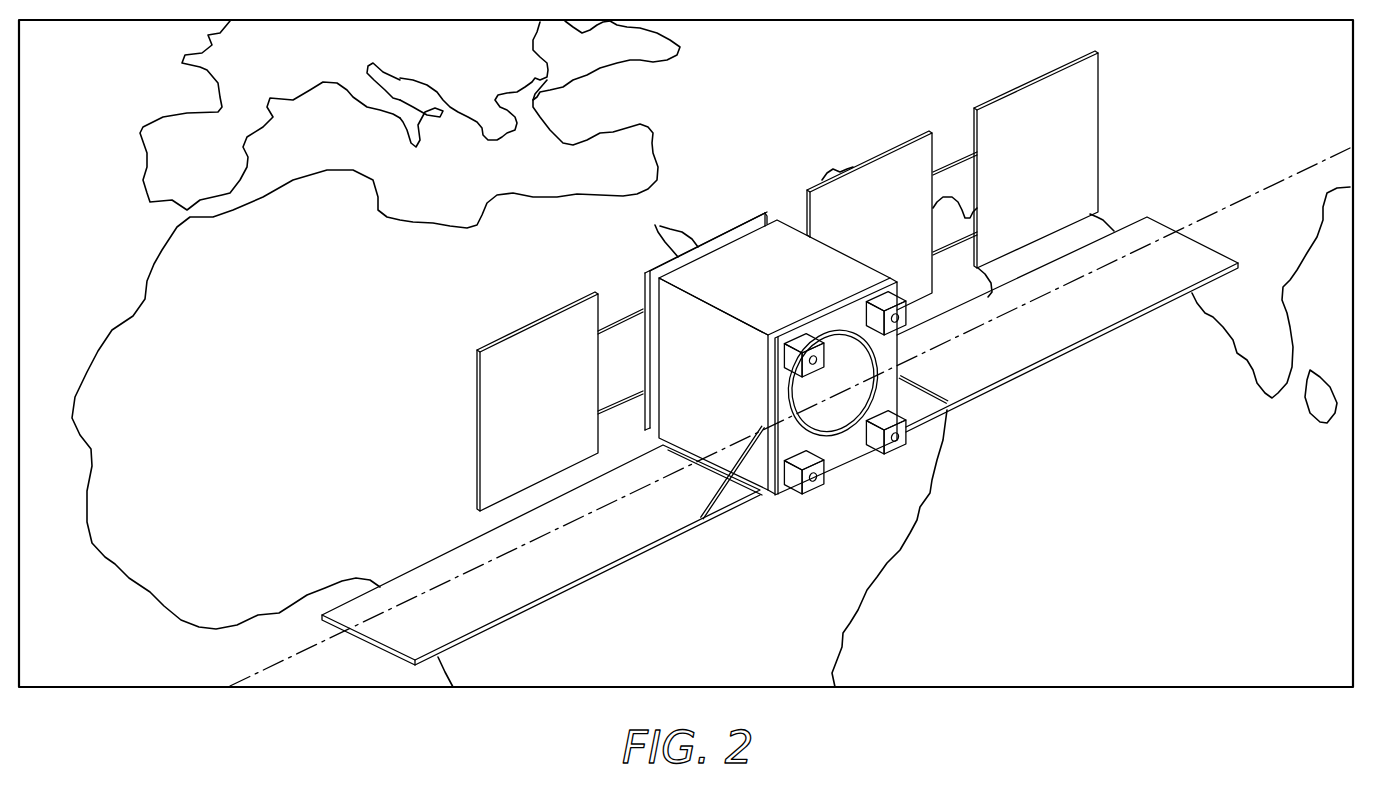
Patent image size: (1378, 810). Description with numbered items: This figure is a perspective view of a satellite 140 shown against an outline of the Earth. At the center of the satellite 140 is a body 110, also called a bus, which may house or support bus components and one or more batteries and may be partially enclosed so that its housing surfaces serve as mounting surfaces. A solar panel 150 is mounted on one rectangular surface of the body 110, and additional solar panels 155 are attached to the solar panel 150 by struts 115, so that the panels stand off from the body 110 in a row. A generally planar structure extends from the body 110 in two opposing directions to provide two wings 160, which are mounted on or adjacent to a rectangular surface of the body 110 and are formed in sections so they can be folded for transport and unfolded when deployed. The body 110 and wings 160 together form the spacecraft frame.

The body 110 is at (758, 242).
The struts 115 is at (963, 153).
The satellite 140 is at (902, 487).
The solar panel 150 is at (655, 269).
The additional solar panels 155 is at (532, 337).
The wings 160 is at (602, 557).